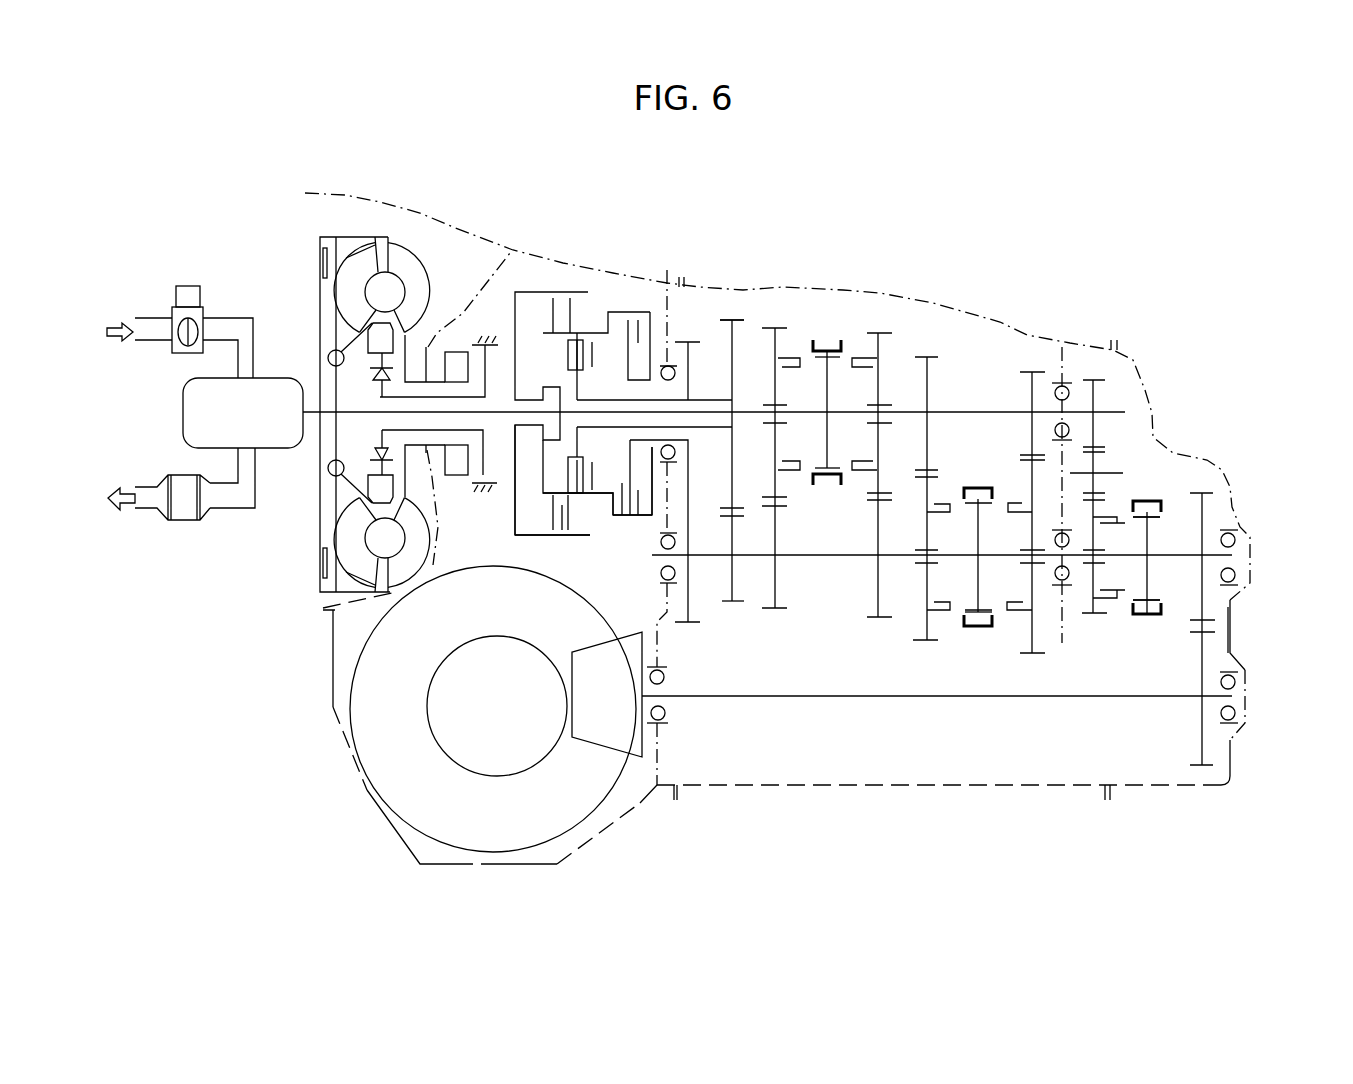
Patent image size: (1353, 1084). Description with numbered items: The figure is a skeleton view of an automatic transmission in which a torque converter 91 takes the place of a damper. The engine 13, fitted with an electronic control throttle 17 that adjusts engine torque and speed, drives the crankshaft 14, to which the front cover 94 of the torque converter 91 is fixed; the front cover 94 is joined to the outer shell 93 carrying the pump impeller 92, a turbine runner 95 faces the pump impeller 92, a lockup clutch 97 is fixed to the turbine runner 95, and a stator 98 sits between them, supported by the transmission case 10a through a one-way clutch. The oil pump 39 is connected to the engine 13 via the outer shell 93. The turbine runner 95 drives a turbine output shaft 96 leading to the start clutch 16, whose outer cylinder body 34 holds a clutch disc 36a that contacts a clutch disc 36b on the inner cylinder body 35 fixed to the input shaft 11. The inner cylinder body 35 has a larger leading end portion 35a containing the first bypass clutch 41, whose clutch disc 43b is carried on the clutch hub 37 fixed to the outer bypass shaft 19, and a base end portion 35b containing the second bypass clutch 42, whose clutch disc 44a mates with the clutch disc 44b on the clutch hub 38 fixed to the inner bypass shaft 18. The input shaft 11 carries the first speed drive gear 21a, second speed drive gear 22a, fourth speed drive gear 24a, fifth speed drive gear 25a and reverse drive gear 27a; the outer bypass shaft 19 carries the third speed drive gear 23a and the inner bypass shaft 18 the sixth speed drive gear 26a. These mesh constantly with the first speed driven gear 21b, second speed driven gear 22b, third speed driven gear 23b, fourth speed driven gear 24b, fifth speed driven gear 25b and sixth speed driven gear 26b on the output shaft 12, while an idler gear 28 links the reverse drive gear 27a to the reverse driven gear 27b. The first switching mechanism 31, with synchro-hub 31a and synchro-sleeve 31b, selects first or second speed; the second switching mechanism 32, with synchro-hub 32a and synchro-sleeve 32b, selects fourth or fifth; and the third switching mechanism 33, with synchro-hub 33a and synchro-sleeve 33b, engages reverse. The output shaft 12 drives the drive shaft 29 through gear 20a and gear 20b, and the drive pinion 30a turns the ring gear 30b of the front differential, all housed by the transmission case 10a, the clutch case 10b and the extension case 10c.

The transmission case 10a is at (733, 787).
The clutch case 10b is at (493, 866).
The extension case 10c is at (1172, 787).
The input shaft 11 is at (980, 412).
The output shaft 12 is at (823, 558).
The engine 13 is at (202, 418).
The crankshaft 14 is at (310, 414).
The start clutch 16 is at (549, 286).
The electronic control throttle 17 is at (169, 282).
The inner bypass shaft 18 is at (683, 427).
The outer bypass shaft 19 is at (682, 380).
The gear 20a is at (1207, 607).
The gear 20b is at (1207, 653).
The first speed drive gear 21a is at (1033, 370).
The first speed driven gear 21b is at (1038, 655).
The second speed drive gear 22a is at (927, 355).
The second speed driven gear 22b is at (925, 642).
The third speed drive gear 23a is at (722, 318).
The third speed driven gear 23b is at (728, 604).
The fourth speed drive gear 24a is at (878, 331).
The fourth speed driven gear 24b is at (878, 619).
The fifth speed drive gear 25a is at (775, 326).
The fifth speed driven gear 25b is at (777, 610).
The sixth speed drive gear 26a is at (735, 318).
The sixth speed driven gear 26b is at (733, 604).
The reverse drive gear 27a is at (1095, 400).
The reverse driven gear 27b is at (1095, 615).
The idler gear 28 is at (1095, 468).
The drive shaft 29 is at (837, 698).
The drive pinion 30a is at (613, 733).
The ring gear 30b is at (407, 793).
The first switching mechanism 31 is at (978, 474).
The synchro-hub 31a is at (980, 593).
The synchro-sleeve 31b is at (972, 627).
The second switching mechanism 32 is at (832, 328).
The synchro-hub 32a is at (828, 405).
The synchro-sleeve 32b is at (820, 487).
The third switching mechanism 33 is at (1164, 495).
The synchro-hub 33a is at (1150, 530).
The synchro-sleeve 33b is at (1147, 617).
The outer cylinder body 34 is at (585, 293).
The inner cylinder body 35 is at (608, 493).
The leading end portion 35a is at (645, 517).
The base end portion 35b is at (525, 537).
The clutch disc 36a is at (565, 535).
The clutch disc 36b is at (552, 530).
The clutch hub 37 is at (647, 382).
The clutch hub 38 is at (580, 459).
The oil pump 39 is at (455, 353).
The first bypass clutch 41 is at (659, 307).
The second bypass clutch 42 is at (604, 316).
The clutch disc 43b is at (628, 517).
The clutch disc 44a is at (560, 357).
The clutch disc 44b is at (568, 470).
The torque converter 91 is at (393, 220).
The pump impeller 92 is at (408, 253).
The outer shell 93 is at (332, 236).
The front cover 94 is at (322, 558).
The turbine runner 95 is at (350, 273).
The turbine output shaft 96 is at (437, 414).
The lockup clutch 97 is at (323, 297).
The stator 98 is at (368, 342).